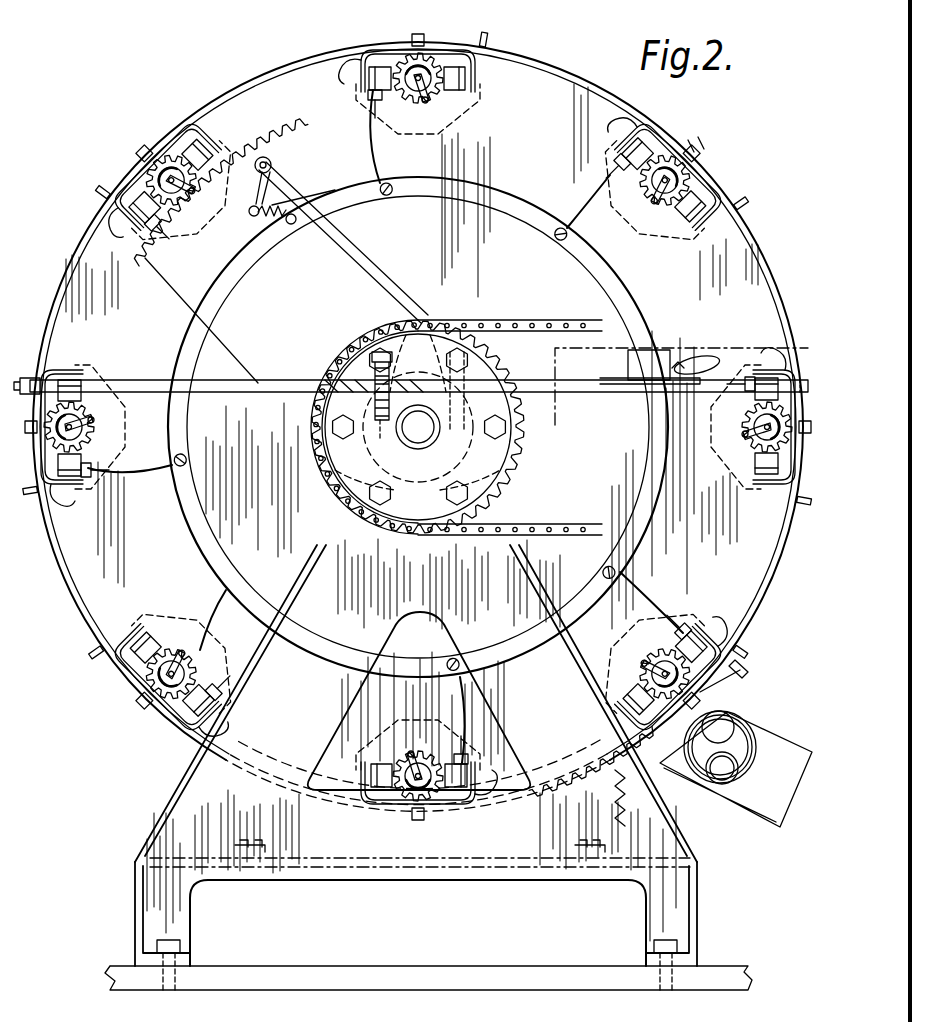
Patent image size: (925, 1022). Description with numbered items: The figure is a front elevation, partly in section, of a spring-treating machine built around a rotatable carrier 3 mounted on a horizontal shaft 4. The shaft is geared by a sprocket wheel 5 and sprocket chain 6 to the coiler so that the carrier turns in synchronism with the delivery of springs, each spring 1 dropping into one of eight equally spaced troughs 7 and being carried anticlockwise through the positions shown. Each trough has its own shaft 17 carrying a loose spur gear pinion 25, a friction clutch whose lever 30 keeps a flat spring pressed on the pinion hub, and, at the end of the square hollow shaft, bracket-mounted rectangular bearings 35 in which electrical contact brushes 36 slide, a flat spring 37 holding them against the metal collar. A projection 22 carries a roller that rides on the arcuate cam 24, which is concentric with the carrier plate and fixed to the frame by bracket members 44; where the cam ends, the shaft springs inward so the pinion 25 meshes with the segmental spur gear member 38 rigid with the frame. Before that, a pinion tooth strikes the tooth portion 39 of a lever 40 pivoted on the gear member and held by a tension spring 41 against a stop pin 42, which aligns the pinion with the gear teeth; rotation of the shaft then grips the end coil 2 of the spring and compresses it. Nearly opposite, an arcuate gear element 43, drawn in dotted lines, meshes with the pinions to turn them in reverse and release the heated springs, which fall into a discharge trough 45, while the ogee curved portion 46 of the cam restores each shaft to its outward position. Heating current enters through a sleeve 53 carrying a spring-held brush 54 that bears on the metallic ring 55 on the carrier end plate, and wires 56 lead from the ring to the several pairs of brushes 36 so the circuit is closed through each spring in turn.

The spring 1 is at (752, 760).
The end coil 2 is at (720, 722).
The rotatable carrier 3 is at (804, 337).
The horizontal shaft 4 is at (400, 425).
The sprocket wheel 5 is at (526, 432).
The sprocket chain 6 is at (588, 522).
The troughs 7 is at (495, 30).
The shaft 17 is at (414, 95).
The projection 22 is at (696, 162).
The arcuate cam 24 is at (552, 58).
The spur gear pinion 25 is at (436, 65).
The lever 30 is at (440, 95).
The rectangular bearings 35 is at (148, 208).
The electrical contact brushes 36 is at (468, 83).
The flat spring 37 is at (365, 58).
The segmental spur gear member 38 is at (278, 135).
The tooth portion 39 is at (272, 160).
The lever 40 is at (285, 165).
The tension spring 41 is at (295, 214).
The stop pin 42 is at (295, 182).
The arcuate gear element 43 is at (602, 756).
The bracket members 44 is at (165, 376).
The trough 45 is at (760, 815).
The ogee curved portion 46 is at (745, 676).
The sleeve 53 is at (628, 362).
The spring-held brush 54 is at (655, 350).
The metallic ring 55 is at (540, 200).
The wires 56 is at (372, 128).